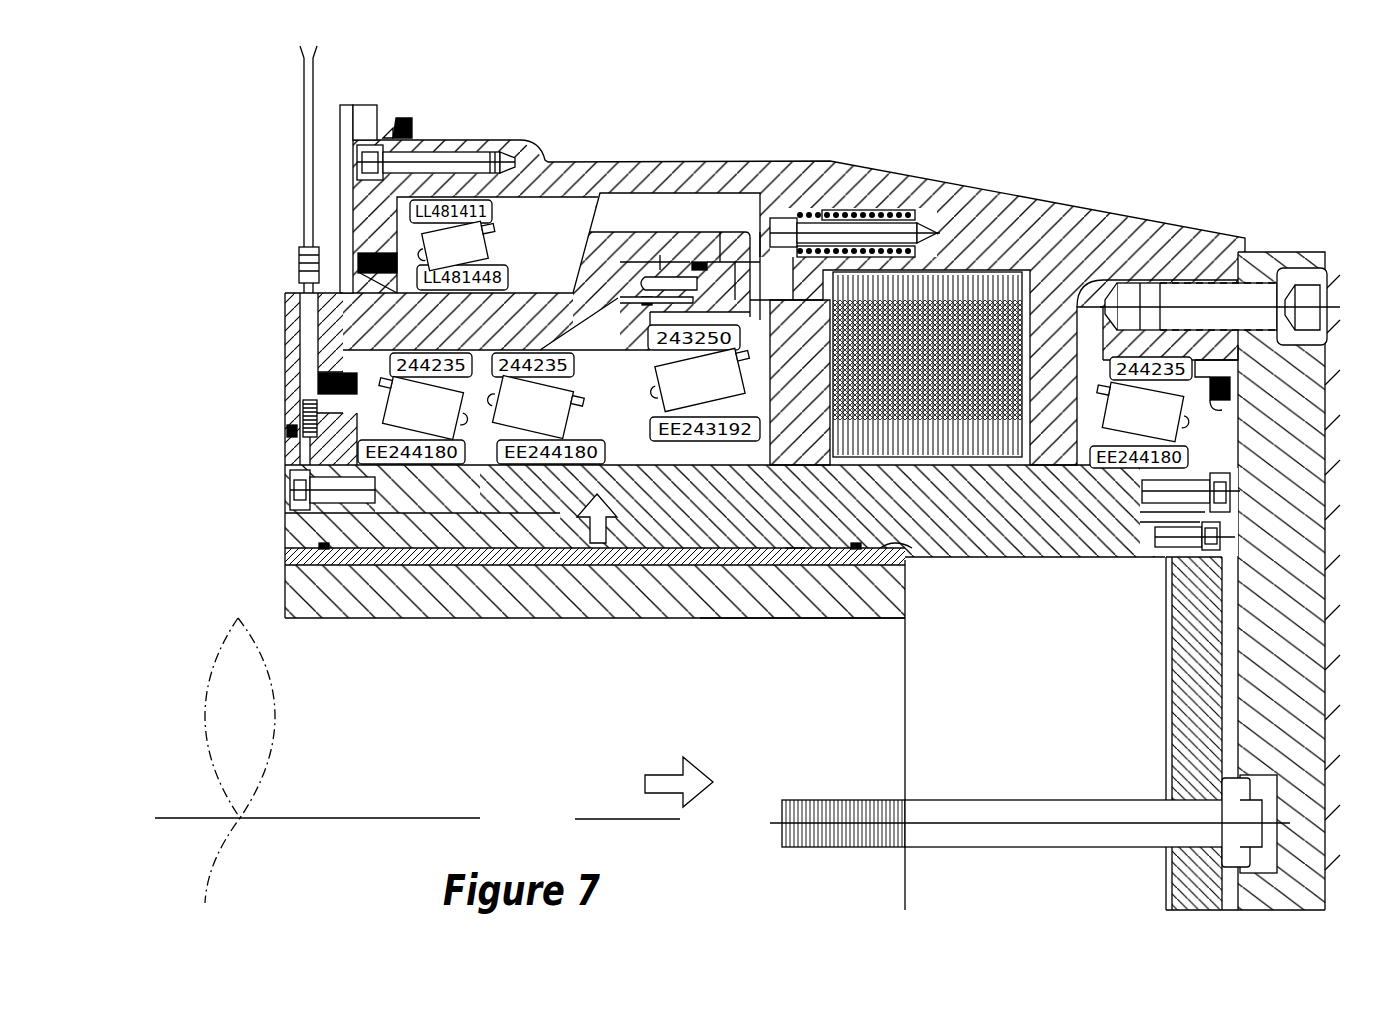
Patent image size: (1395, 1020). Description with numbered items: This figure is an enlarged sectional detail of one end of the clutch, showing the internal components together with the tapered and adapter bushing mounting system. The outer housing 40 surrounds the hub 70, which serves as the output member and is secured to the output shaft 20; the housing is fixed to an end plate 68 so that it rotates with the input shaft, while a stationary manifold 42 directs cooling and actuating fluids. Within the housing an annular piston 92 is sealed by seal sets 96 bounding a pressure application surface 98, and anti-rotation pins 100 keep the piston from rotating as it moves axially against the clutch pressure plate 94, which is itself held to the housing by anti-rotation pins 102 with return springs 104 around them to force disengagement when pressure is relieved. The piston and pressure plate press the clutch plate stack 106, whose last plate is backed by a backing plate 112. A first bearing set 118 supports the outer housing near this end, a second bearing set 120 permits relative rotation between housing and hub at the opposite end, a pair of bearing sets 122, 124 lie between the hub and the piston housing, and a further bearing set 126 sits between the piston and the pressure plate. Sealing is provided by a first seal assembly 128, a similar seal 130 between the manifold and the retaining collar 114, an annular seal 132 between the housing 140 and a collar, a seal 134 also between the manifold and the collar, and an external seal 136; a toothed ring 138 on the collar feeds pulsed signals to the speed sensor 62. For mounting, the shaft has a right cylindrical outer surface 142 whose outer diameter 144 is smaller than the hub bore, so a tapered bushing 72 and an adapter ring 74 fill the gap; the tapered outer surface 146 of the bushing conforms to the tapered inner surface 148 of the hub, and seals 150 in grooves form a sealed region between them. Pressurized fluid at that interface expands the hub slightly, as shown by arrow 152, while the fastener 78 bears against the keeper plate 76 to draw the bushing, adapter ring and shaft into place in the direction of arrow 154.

The output shaft 20 is at (552, 746).
The outer housing 40 is at (938, 183).
The stationary manifold 42 is at (290, 321).
The speed sensor 62 is at (308, 300).
The end plate 68 is at (1255, 712).
The hub 70 is at (288, 523).
The tapered bushing 72 is at (282, 553).
The adapter ring 74 is at (285, 603).
The keeper plate 76 is at (1178, 675).
The fastener 78 is at (963, 803).
The annular piston 92 is at (722, 262).
The clutch pressure plate 94 is at (760, 262).
The seal sets 96 is at (640, 290).
The pressure application surface 98 is at (693, 262).
The anti-rotation pins 100 is at (648, 297).
The anti-rotation pins 102 is at (893, 228).
The return springs 104 is at (830, 213).
The clutch plate stack 106 is at (965, 325).
The backing plate 112 is at (1130, 290).
The retaining collar 114 is at (288, 466).
The first bearing set 118 is at (430, 197).
The second bearing set 120 is at (1198, 327).
The bearing set 122 is at (402, 480).
The bearing set 124 is at (535, 480).
The bearing set 126 is at (692, 468).
The first seal assembly 128 is at (357, 260).
The seal 130 is at (320, 376).
The annular seal 132 is at (1232, 388).
The seal 134 is at (289, 432).
The external seal 136 is at (395, 118).
The toothed ring 138 is at (305, 411).
The housing 140 is at (1160, 545).
The cylindrical outer surface 142 is at (892, 613).
The shaft outer diameter 144 is at (828, 622).
The tapered outer surface 146 is at (882, 548).
The tapered inner surface 148 is at (795, 556).
The seals 150 is at (322, 553).
The arrow 152 is at (612, 525).
The arrow 154 is at (668, 778).